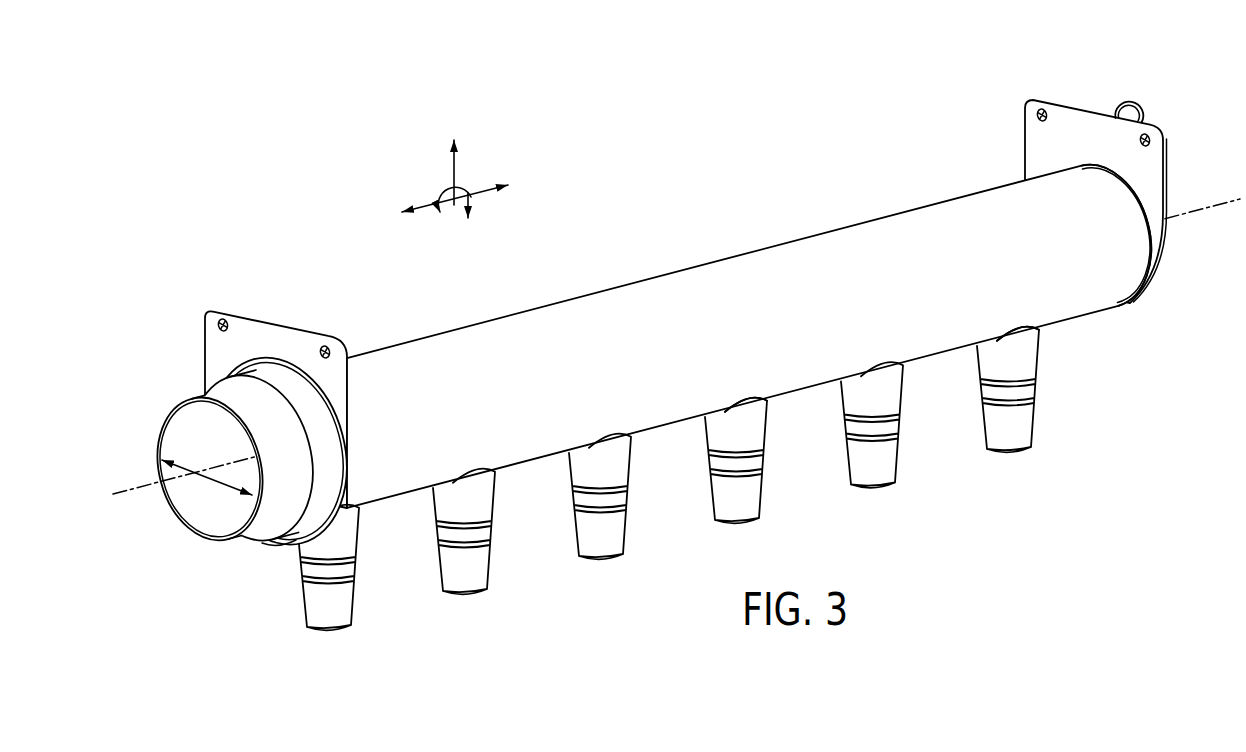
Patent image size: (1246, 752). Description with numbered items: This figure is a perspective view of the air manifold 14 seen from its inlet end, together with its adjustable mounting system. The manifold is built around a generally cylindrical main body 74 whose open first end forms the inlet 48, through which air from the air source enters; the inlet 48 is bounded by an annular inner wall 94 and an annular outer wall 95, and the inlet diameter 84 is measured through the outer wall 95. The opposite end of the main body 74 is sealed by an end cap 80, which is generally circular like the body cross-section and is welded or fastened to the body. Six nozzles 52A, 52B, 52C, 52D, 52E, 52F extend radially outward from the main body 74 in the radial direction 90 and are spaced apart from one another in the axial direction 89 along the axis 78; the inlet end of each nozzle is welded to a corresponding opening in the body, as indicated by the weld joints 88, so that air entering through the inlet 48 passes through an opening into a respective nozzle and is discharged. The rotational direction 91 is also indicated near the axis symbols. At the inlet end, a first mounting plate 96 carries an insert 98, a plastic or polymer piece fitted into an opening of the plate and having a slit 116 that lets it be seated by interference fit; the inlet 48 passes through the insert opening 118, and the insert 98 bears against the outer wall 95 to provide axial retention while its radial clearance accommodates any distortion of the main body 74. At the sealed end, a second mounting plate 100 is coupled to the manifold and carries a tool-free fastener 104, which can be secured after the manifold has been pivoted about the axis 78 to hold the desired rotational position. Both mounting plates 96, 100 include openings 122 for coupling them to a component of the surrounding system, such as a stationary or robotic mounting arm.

The air manifold 14 is at (676, 351).
The inlet 48 is at (213, 448).
The nozzle 52A is at (350, 597).
The nozzle 52B is at (490, 562).
The nozzle 52C is at (625, 523).
The nozzle 52D is at (760, 490).
The nozzle 52E is at (898, 455).
The nozzle 52F is at (1033, 417).
The main body 74 is at (810, 247).
The axis 78 is at (1200, 211).
The end cap 80 is at (1148, 242).
The inlet diameter 84 is at (249, 490).
The weld joint 88 is at (747, 406).
The axial direction 89 is at (481, 196).
The radial direction 90 is at (458, 165).
The rotational direction 91 is at (438, 181).
The annular inner wall 94 is at (203, 513).
The annular outer wall 95 is at (253, 412).
The first mounting plate 96 is at (281, 324).
The insert 98 is at (229, 376).
The second mounting plate 100 is at (1062, 98).
The tool-free fastener 104 is at (1134, 99).
The slit 116 is at (276, 541).
The insert opening 118 is at (314, 412).
The openings 122 is at (216, 322).